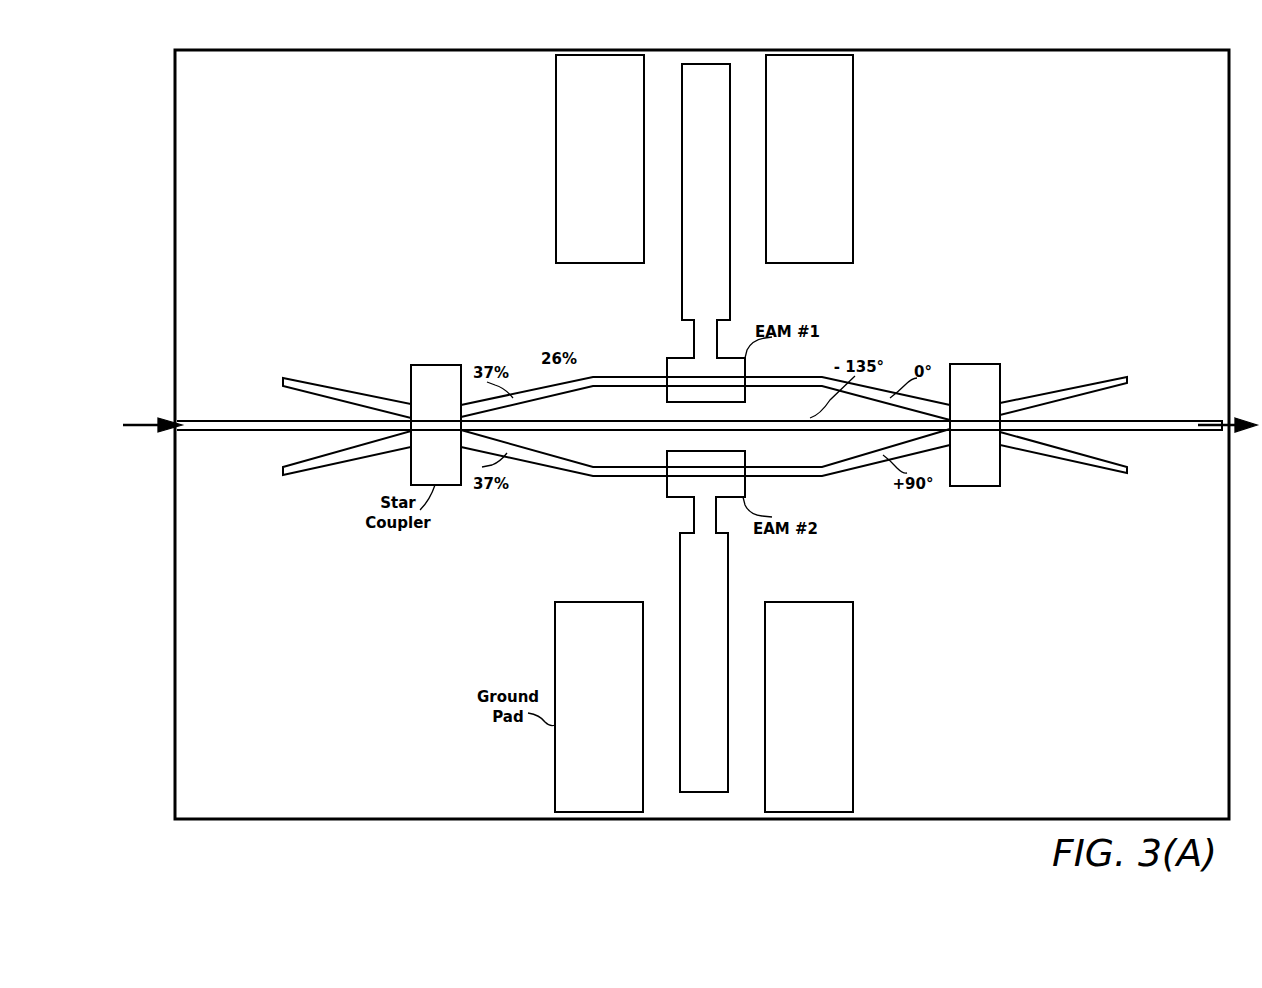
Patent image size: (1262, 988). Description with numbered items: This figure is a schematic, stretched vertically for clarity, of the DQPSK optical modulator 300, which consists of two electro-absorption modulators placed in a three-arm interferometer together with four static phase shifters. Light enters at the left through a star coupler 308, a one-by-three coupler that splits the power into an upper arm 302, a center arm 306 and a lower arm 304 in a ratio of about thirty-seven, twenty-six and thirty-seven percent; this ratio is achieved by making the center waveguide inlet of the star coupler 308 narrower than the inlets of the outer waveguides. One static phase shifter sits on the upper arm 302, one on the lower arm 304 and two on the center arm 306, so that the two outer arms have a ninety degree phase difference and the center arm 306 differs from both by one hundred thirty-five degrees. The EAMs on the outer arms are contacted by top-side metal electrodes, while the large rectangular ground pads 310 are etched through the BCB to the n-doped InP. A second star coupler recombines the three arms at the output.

The modulator 300 is at (1097, 713).
The upper arm 302 is at (622, 377).
The lower arm 304 is at (607, 478).
The center arm 306 is at (759, 427).
The star coupler 308 is at (437, 365).
The ground pads 310 is at (598, 602).